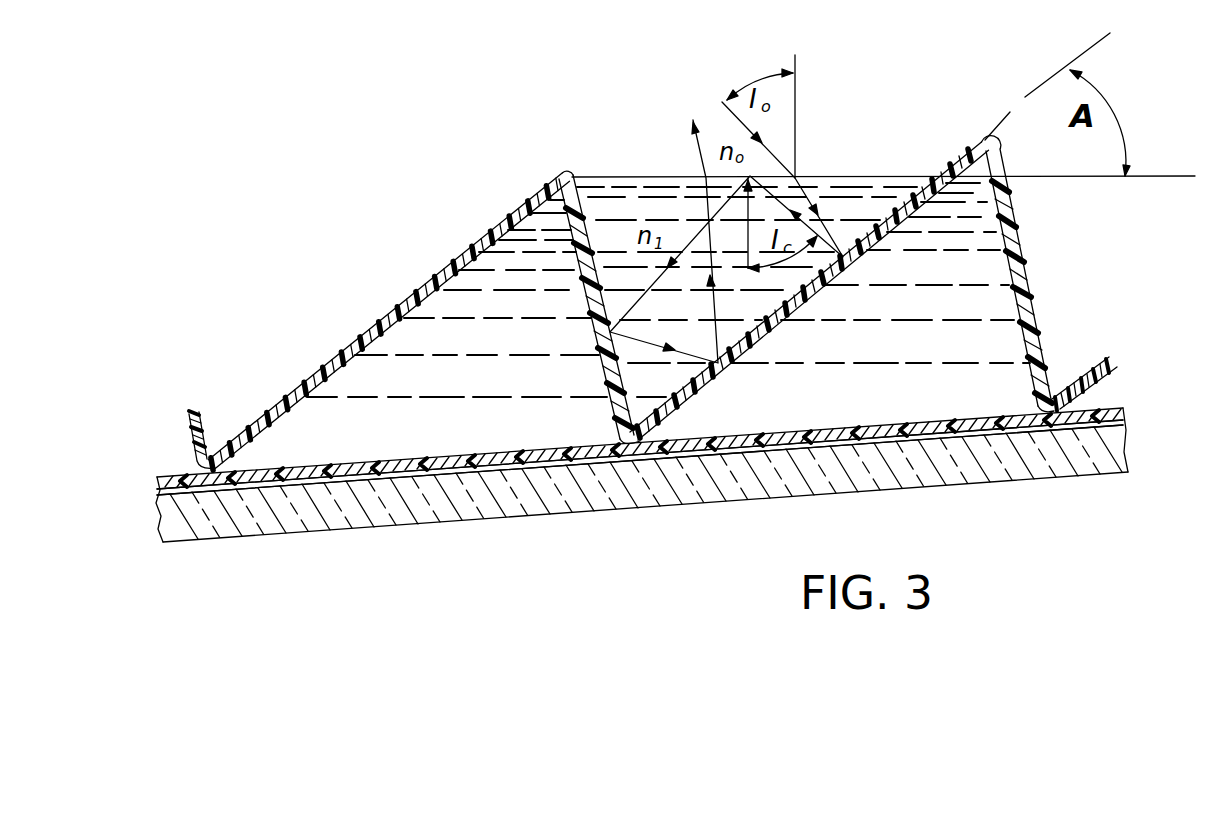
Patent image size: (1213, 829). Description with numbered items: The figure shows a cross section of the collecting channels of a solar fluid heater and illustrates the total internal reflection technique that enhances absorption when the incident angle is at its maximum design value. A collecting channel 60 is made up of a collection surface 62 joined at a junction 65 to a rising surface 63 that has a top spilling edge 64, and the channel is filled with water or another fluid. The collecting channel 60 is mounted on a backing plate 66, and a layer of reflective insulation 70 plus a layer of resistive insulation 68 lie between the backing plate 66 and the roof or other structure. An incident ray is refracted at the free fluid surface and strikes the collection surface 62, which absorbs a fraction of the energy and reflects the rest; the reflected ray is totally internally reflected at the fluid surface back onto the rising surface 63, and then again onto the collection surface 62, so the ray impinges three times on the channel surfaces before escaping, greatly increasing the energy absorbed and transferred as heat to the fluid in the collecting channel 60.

The collecting channel 60 is at (838, 207).
The collection surface 62 is at (950, 160).
The rising surface 63 is at (583, 213).
The top spilling edge 64 is at (560, 176).
The junction 65 is at (633, 425).
The backing plate 66 is at (1123, 410).
The resistive insulation 68 is at (1125, 460).
The reflective insulation 70 is at (1123, 422).